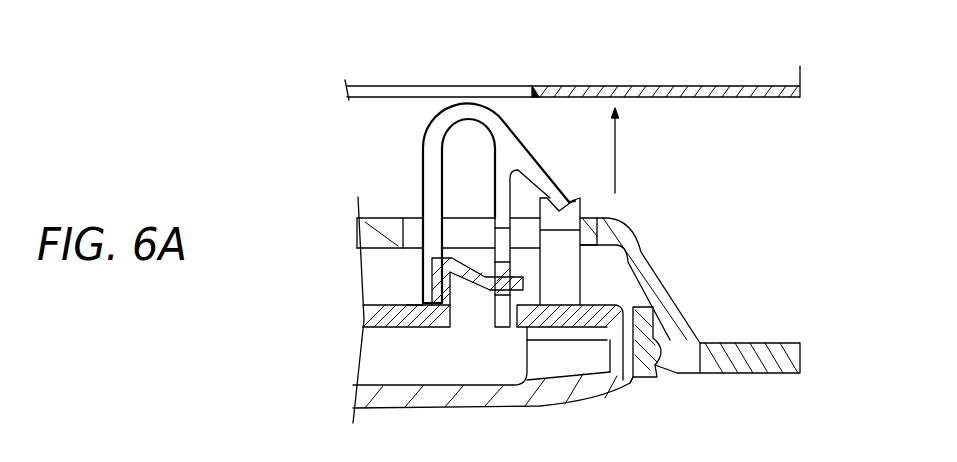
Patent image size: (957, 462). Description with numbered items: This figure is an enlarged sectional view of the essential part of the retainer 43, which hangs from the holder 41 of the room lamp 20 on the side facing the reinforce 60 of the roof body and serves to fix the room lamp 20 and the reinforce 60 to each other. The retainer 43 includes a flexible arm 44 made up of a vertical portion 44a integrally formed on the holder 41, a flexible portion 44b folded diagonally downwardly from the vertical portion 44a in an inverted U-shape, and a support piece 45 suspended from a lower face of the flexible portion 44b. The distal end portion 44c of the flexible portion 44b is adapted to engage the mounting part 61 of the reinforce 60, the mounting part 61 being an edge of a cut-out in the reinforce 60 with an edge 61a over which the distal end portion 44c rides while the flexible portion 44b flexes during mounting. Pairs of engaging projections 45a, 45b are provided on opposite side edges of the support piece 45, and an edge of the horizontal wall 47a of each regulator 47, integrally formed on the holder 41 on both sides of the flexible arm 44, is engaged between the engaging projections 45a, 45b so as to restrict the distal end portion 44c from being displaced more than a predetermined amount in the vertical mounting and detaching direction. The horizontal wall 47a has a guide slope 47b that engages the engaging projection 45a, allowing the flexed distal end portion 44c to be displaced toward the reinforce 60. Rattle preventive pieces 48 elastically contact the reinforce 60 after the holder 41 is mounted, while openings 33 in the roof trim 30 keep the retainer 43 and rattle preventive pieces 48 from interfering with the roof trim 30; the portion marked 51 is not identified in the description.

The room lamp 20 is at (690, 193).
The roof trim 30 is at (775, 335).
The openings 33 is at (417, 243).
The holder 41 is at (660, 314).
The retainer 43 is at (352, 172).
The flexible arm 44 is at (420, 113).
The vertical portion 44a is at (428, 157).
The flexible portion 44b is at (507, 151).
The distal end portion 44c is at (578, 203).
The support piece 45 is at (500, 205).
The engaging projection 45a is at (484, 214).
The engaging projection 45b is at (491, 303).
The regulator 47 is at (410, 285).
The horizontal wall 47a is at (631, 263).
The guide slope 47b is at (422, 210).
The rattle preventive piece 48 is at (581, 210).
The bottom corner portion 51 is at (630, 400).
The reinforce 60 is at (702, 80).
The mounting part 61 is at (573, 88).
The edge 61a is at (532, 86).